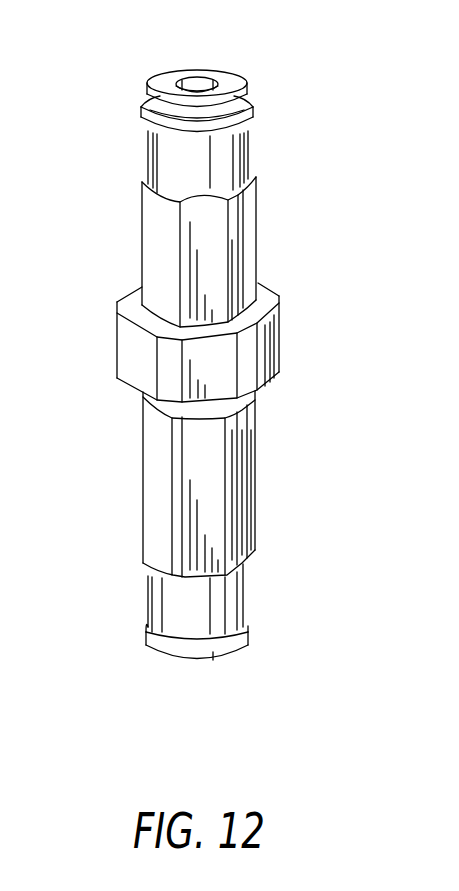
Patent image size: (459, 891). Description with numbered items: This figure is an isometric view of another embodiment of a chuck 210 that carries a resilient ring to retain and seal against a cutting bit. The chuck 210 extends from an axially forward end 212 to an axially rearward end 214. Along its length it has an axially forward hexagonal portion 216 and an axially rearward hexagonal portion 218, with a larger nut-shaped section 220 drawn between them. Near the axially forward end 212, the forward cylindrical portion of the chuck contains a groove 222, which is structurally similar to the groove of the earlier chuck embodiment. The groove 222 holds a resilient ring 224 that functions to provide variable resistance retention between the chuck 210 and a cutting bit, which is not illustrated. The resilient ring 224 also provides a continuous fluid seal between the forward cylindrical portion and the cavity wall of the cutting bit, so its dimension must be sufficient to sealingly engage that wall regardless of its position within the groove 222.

The chuck 210 is at (97, 312).
The axially forward end 212 is at (165, 85).
The axially rearward end 214 is at (213, 656).
The axially forward hexagonal portion 216 is at (245, 240).
The axially rearward hexagonal portion 218 is at (245, 470).
The hex nut 220 is at (245, 362).
The groove 222 is at (178, 119).
The resilient ring 224 is at (222, 133).